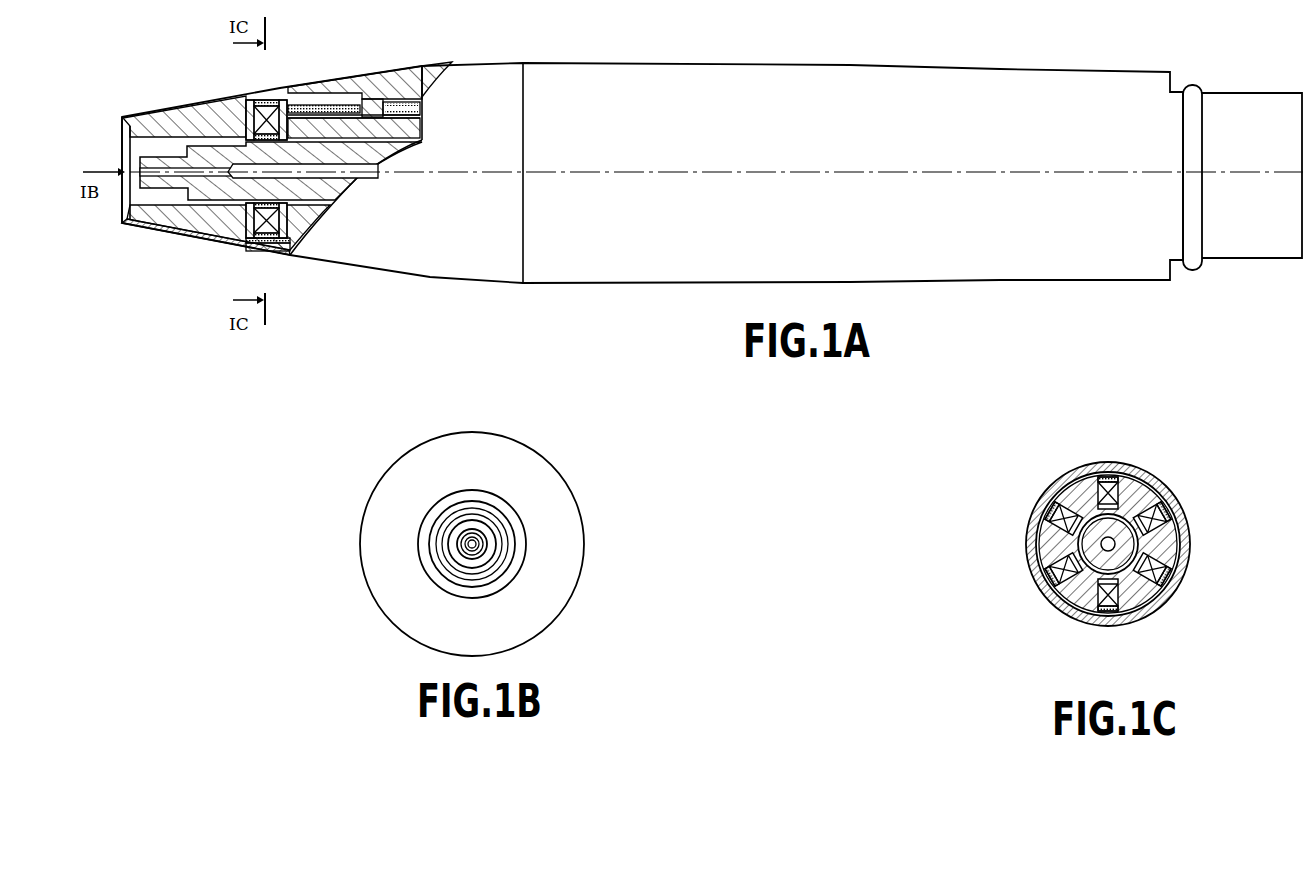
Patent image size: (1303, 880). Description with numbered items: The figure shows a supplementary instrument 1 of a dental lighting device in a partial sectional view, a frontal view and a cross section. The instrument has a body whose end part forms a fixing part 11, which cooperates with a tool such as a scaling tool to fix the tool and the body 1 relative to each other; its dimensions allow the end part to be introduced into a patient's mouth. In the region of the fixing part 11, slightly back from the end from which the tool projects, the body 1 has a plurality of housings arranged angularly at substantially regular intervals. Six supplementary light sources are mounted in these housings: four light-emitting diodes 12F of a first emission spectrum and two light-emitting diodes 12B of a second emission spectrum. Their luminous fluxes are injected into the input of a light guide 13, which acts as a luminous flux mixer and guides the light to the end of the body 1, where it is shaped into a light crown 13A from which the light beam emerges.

In FIG. 1A, the supplementary instrument 1 is at (740, 107).
In FIG. 1B, the supplementary instrument 1 is at (517, 460).
In FIG. 1C, the supplementary instrument 1 is at (1067, 470).
In FIG. 1A, the fixing part 11 is at (158, 160).
In FIG. 1B, the fixing part 11 is at (467, 527).
In FIG. 1A, the light-emitting diodes of the first group 12F is at (262, 104).
In FIG. 1C, the light-emitting diodes of the first group 12F is at (1052, 503).
In FIG. 1C, the light-emitting diodes of the second group 12B is at (1105, 463).
In FIG. 1A, the light guide 13 is at (180, 224).
In FIG. 1A, the light crown 13A is at (122, 133).
In FIG. 1B, the light crown 13A is at (473, 580).